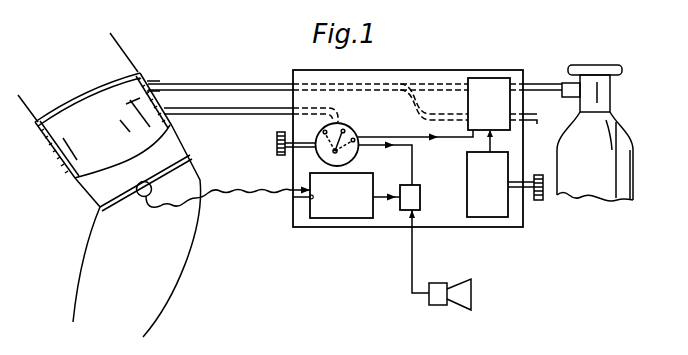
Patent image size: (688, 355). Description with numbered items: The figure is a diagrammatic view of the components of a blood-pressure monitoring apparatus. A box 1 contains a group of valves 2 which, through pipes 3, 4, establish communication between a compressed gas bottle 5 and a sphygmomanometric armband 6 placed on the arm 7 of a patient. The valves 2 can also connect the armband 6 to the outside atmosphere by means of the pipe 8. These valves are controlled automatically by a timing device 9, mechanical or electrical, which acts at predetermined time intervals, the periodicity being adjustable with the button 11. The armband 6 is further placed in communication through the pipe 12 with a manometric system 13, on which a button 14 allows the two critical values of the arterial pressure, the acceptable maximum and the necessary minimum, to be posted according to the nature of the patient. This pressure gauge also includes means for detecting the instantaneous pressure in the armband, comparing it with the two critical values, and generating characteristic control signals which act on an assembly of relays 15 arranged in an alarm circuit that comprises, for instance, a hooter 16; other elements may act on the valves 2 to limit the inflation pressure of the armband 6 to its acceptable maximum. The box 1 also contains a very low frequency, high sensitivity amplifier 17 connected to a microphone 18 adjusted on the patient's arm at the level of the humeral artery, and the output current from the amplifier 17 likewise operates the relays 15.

The box 1 is at (397, 70).
The group of valves 2 is at (487, 87).
The pipe 3 is at (535, 90).
The pipe 4 is at (236, 88).
The compressed gas bottle 5 is at (608, 125).
The sphygmomanometric armband 6 is at (152, 82).
The arm 7 is at (113, 65).
The pipe 8 is at (536, 122).
The timing device 9 is at (495, 212).
The button 11 is at (540, 200).
The pipe 12 is at (217, 113).
The manometric system 13 is at (322, 152).
The button 14 is at (277, 147).
The assembly of relays 15 is at (413, 199).
The hooter 16 is at (440, 307).
The amplifier 17 is at (353, 212).
The microphone 18 is at (143, 200).